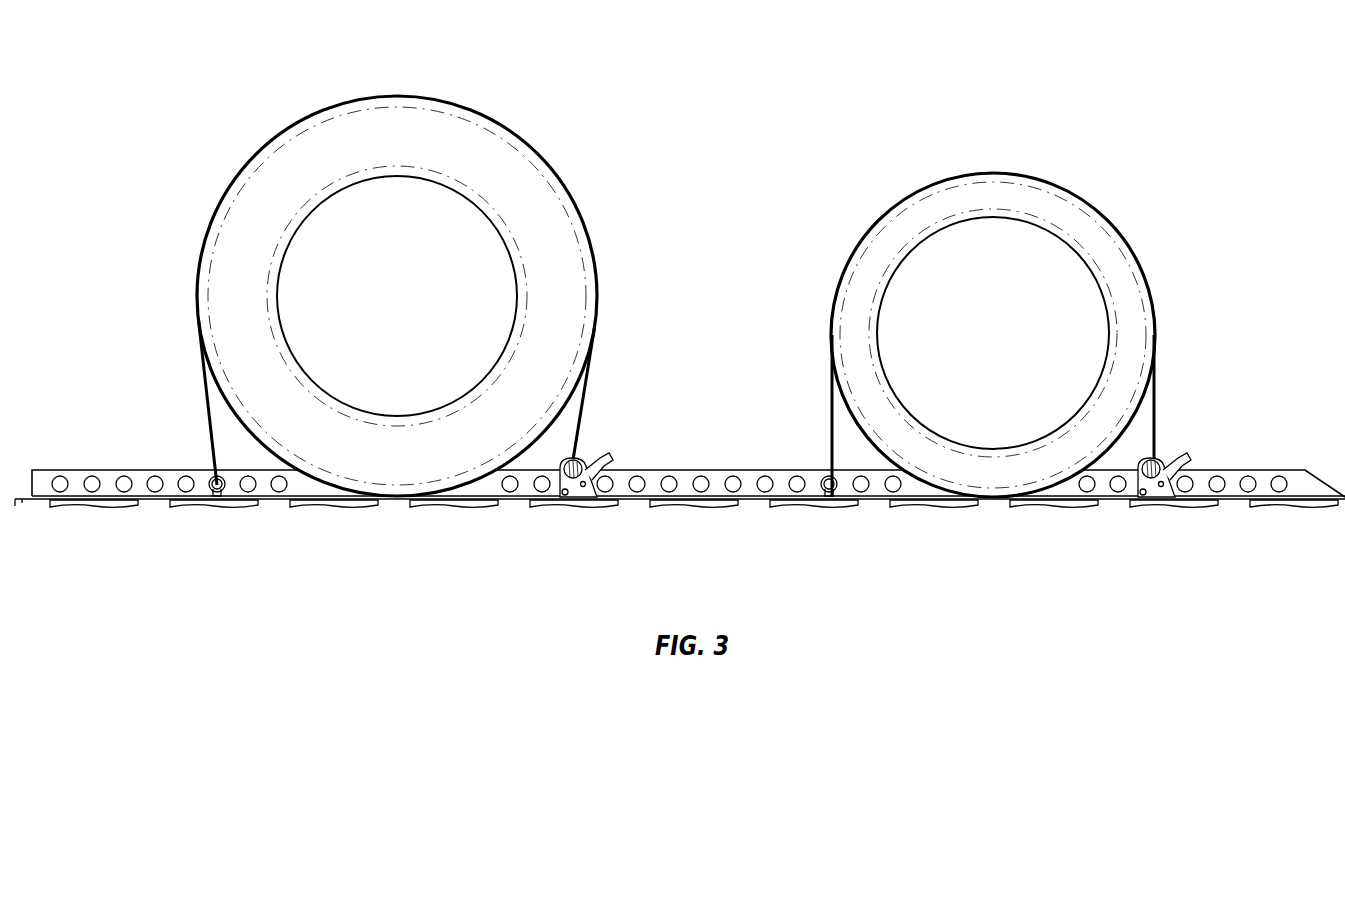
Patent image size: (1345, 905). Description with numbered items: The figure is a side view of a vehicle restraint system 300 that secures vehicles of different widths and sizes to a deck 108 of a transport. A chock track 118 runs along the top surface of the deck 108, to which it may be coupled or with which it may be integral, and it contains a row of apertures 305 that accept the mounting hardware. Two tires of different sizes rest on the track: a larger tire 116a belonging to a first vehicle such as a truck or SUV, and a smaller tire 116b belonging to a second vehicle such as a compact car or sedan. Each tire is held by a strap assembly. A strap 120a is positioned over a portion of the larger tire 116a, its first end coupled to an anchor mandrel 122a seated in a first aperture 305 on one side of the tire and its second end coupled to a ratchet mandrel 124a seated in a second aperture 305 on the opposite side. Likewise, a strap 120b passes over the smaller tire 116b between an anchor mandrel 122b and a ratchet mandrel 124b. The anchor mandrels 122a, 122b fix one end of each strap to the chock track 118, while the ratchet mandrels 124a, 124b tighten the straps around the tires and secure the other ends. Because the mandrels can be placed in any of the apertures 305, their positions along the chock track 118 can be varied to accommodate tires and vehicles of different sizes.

The system 300 is at (200, 86).
The deck 108 is at (25, 500).
The chock track 118 is at (688, 456).
The apertures 305 is at (92, 476).
The tire 116a is at (302, 224).
The tire 116b is at (900, 268).
The strap 120a is at (210, 430).
The strap 120b is at (832, 405).
The anchor mandrel 122a is at (214, 492).
The anchor mandrel 122b is at (827, 493).
The ratchet mandrel 124a is at (585, 462).
The ratchet mandrel 124b is at (1165, 462).